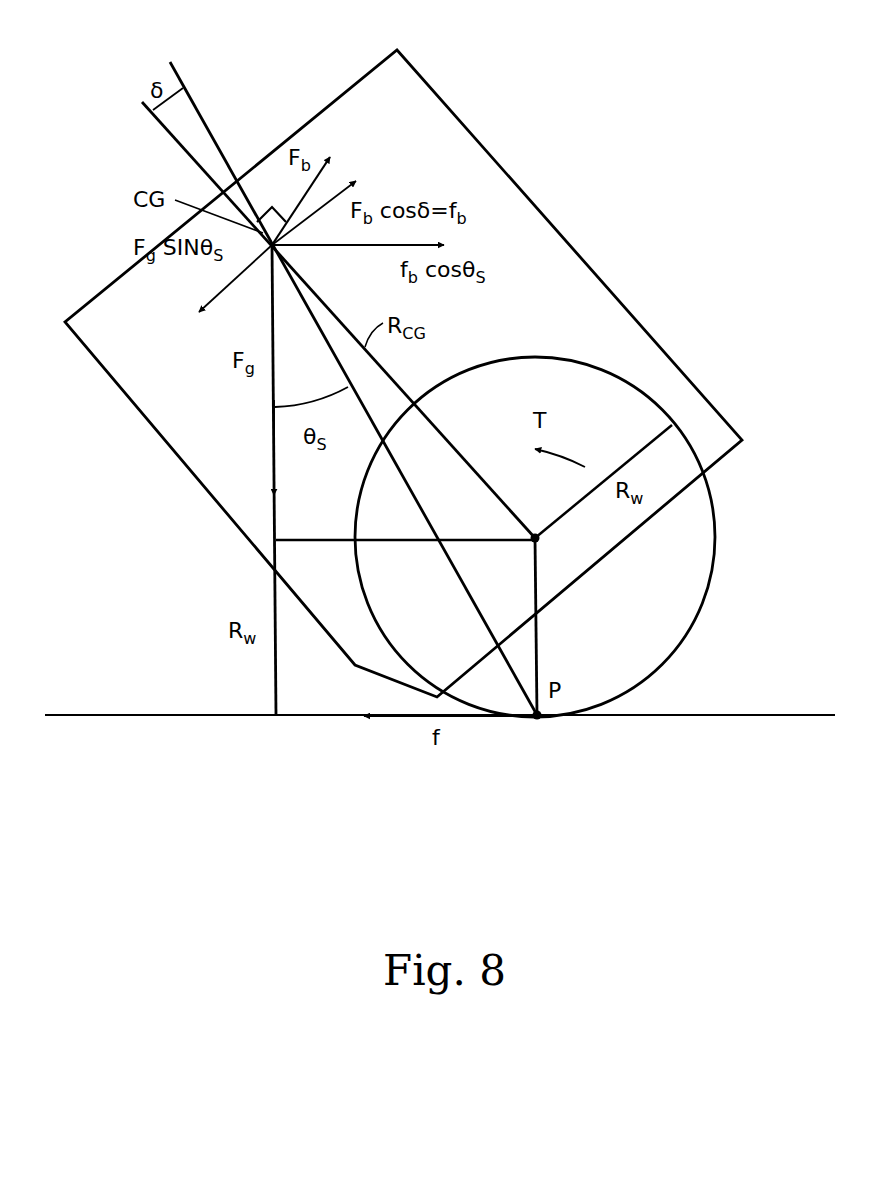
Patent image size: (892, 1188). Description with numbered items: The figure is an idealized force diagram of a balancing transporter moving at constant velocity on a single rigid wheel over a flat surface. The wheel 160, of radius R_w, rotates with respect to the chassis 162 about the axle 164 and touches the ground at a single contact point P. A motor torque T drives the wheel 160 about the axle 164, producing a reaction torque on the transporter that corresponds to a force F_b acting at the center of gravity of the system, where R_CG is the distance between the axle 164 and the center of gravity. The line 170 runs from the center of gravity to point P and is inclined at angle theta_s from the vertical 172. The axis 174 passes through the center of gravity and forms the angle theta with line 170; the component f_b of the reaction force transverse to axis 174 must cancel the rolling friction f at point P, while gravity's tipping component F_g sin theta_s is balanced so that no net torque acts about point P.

The wheel 160 is at (688, 633).
The chassis 162 is at (98, 362).
The axle 164 is at (540, 547).
The line from the CG to point P 170 is at (197, 103).
The vertical 172 is at (275, 518).
The axis between the CG and point P 174 is at (177, 140).